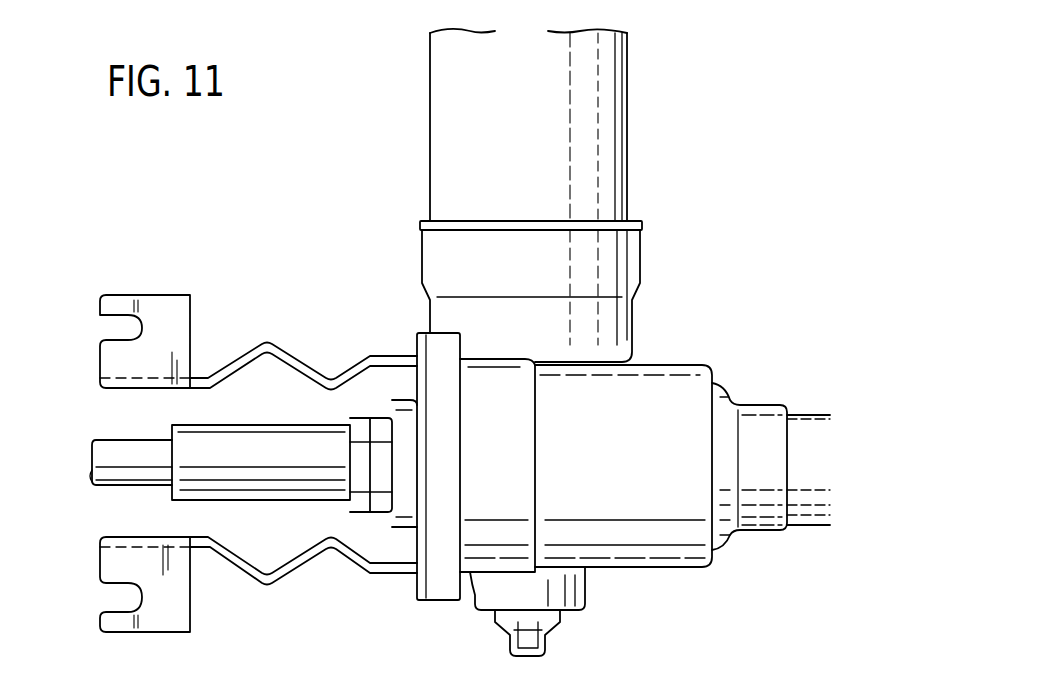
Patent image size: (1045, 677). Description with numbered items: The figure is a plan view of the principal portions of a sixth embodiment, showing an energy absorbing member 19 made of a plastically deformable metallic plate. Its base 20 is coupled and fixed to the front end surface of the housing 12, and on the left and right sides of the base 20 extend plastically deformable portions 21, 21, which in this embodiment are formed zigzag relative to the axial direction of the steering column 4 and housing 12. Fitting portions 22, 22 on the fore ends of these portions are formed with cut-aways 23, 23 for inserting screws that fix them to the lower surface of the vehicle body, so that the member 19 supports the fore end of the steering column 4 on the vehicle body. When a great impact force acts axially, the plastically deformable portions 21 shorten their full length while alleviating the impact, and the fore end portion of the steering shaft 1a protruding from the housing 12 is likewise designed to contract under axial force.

The steering shaft 1a is at (92, 452).
The steering column 4 is at (806, 437).
The housing 12 is at (653, 552).
The energy absorbing member 19 is at (240, 352).
The base 20 is at (422, 468).
The plastically deformable portion 21 is at (277, 352).
The fitting portion 22 is at (158, 305).
The cut-away 23 is at (100, 316).